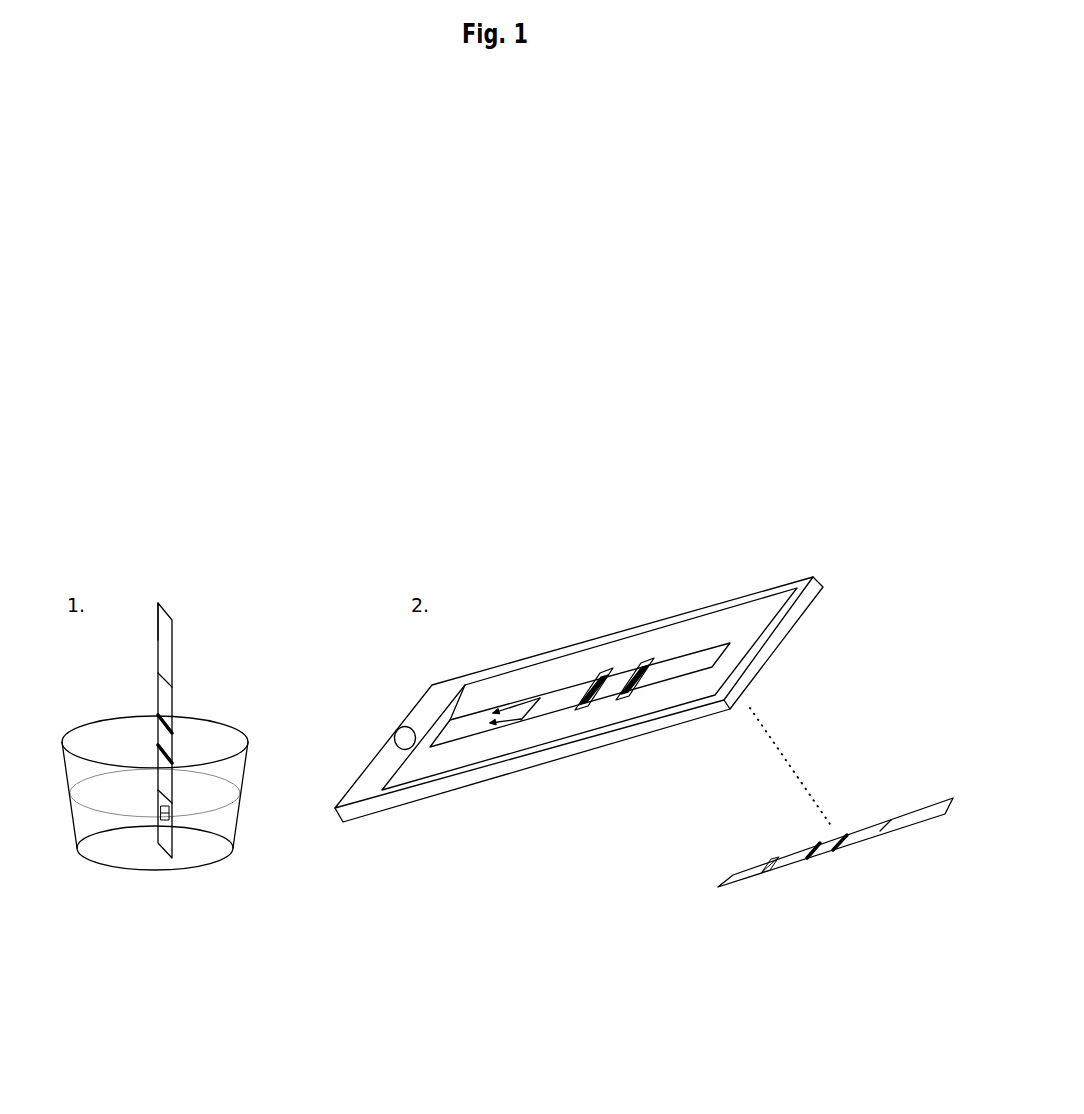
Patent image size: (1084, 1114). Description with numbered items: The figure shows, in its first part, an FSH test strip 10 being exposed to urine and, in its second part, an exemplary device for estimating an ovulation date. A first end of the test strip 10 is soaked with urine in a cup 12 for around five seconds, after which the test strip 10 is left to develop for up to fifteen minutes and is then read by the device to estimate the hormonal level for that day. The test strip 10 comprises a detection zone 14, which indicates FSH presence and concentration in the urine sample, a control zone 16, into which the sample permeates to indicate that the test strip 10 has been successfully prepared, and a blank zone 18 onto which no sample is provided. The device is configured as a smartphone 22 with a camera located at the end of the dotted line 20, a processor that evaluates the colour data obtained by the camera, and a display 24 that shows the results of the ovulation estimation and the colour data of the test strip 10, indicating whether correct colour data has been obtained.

The FSH test strip 10 is at (180, 625).
The cup 12 is at (227, 720).
The detection zone 14 is at (155, 747).
The control zone 16 is at (155, 717).
The blank zone 18 is at (155, 617).
The dotted line 20 is at (792, 757).
The smartphone 22 is at (722, 585).
The display 24 is at (608, 660).